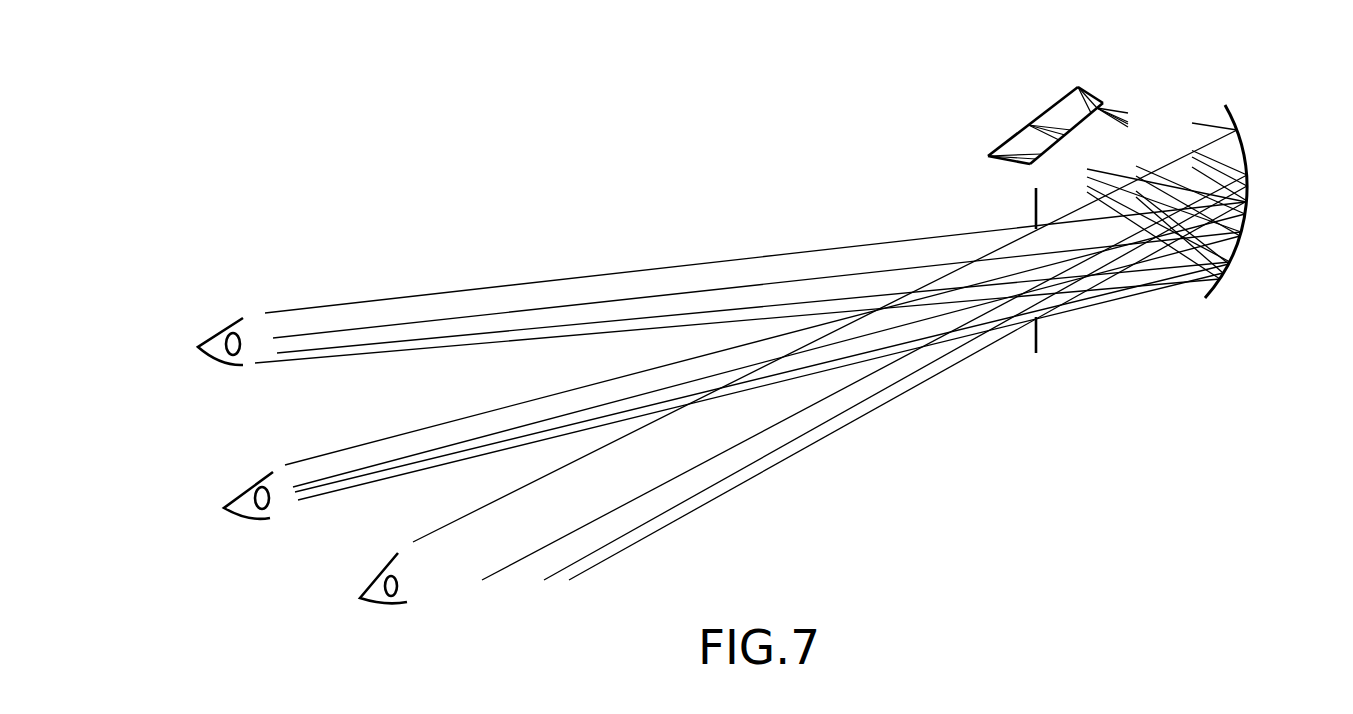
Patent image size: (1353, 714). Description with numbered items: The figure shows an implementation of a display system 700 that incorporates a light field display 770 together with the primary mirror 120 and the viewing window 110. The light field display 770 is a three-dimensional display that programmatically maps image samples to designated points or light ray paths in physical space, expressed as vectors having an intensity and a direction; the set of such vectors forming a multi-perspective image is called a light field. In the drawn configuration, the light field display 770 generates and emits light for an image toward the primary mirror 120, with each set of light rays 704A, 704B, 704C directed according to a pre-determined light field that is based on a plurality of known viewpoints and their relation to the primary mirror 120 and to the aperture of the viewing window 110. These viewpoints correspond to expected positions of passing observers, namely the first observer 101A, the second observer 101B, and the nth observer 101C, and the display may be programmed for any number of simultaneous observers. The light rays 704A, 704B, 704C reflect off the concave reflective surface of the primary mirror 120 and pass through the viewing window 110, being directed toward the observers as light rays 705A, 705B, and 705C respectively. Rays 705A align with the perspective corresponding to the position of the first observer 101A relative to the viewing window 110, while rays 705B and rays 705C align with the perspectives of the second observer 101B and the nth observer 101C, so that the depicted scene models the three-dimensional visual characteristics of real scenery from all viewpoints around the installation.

The display system 700 is at (333, 109).
The light field display 770 is at (1028, 125).
The primary mirror 120 is at (1223, 108).
The viewing window 110 is at (1036, 333).
The light rays 704A is at (1084, 189).
The light rays 704B is at (1133, 155).
The light rays 704C is at (1190, 125).
The light rays 705A is at (680, 305).
The light rays 705B is at (580, 425).
The light rays 705C is at (674, 470).
The first observer 101A is at (206, 338).
The second observer 101B is at (225, 492).
The nth observer 101C is at (360, 590).